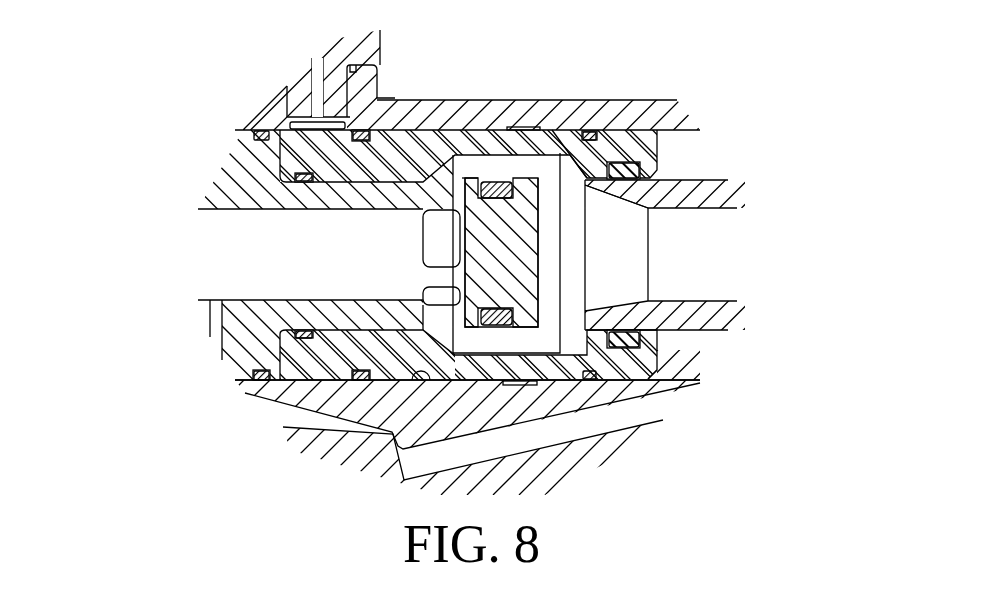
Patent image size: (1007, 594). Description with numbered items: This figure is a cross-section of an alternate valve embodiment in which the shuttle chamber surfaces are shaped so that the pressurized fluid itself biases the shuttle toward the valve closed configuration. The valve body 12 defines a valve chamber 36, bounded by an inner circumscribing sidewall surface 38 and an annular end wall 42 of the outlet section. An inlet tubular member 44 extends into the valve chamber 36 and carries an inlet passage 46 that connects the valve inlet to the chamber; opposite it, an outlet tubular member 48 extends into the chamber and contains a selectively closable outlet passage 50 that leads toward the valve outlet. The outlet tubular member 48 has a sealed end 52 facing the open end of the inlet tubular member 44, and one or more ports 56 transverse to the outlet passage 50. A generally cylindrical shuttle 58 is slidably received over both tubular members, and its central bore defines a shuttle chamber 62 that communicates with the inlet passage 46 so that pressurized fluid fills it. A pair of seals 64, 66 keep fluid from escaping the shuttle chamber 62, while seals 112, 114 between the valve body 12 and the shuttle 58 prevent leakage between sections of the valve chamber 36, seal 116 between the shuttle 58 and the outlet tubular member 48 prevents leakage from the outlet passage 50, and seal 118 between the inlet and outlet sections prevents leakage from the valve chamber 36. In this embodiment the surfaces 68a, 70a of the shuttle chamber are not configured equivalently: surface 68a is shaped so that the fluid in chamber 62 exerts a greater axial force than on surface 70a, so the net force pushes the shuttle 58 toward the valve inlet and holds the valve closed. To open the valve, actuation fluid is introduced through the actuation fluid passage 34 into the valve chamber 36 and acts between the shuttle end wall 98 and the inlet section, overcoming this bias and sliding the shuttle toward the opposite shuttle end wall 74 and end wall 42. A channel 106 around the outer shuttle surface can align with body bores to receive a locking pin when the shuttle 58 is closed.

The valve body 12 is at (550, 130).
The actuation fluid passage 34 is at (528, 437).
The valve chamber 36 is at (697, 160).
The inner circumscribing sidewall surface 38 is at (683, 380).
The annular end wall 42 is at (280, 157).
The inlet tubular member 44 is at (683, 197).
The inlet passage 46 is at (753, 261).
The outlet tubular member 48 is at (502, 225).
The outlet passage 50 is at (257, 250).
The sealed end 52 is at (543, 258).
The ports 56 is at (437, 250).
The shuttle 58 is at (637, 356).
The shuttle chamber 62 is at (560, 332).
The seal 64 is at (623, 181).
The seal 66 is at (497, 181).
The shuttle surface 68a is at (600, 172).
The shuttle surface 70a is at (441, 178).
The shuttle end wall 74 is at (282, 352).
The shuttle end wall 98 is at (657, 349).
The channel 106 is at (414, 138).
The seal 112 is at (600, 128).
The seal 114 is at (358, 376).
The seal 116 is at (305, 332).
The seal 118 is at (262, 372).